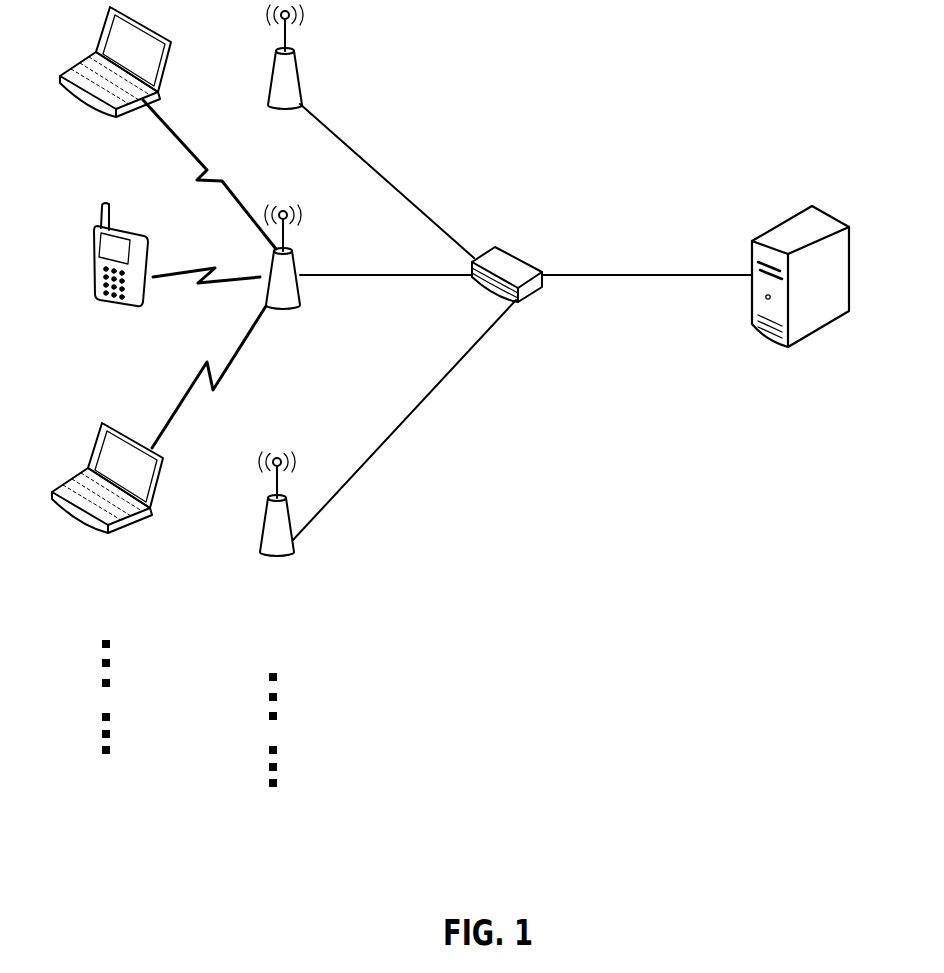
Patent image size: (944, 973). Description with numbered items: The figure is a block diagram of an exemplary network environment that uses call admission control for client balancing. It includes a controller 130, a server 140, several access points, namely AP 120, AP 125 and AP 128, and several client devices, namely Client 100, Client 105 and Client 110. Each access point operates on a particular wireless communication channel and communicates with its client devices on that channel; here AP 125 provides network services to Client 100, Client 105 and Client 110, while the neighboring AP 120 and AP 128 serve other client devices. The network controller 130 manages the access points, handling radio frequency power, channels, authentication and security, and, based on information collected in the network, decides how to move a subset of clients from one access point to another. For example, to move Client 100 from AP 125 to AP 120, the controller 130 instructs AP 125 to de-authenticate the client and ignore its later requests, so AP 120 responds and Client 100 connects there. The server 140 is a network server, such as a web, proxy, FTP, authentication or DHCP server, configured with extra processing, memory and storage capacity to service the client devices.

The client device 100 is at (85, 171).
The client device 105 is at (110, 371).
The client device 110 is at (93, 601).
The access point 120 is at (268, 158).
The access point 125 is at (267, 371).
The access point 128 is at (262, 613).
The network controller 130 is at (560, 366).
The server 140 is at (791, 401).